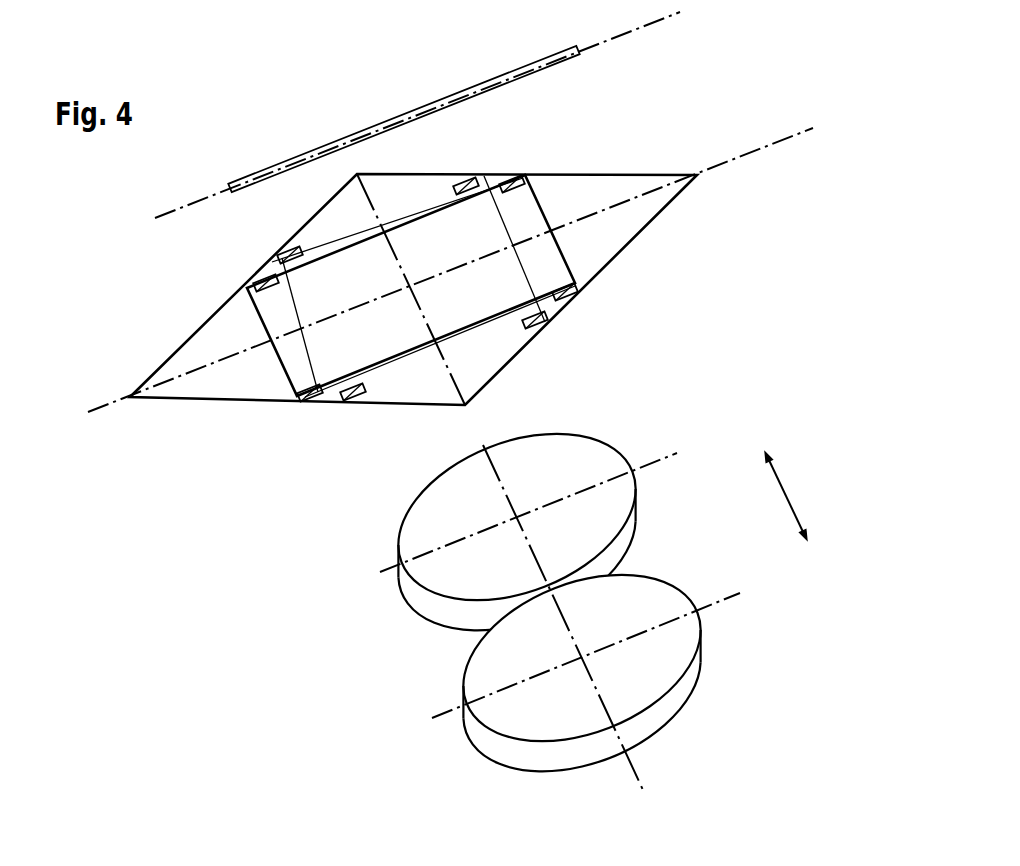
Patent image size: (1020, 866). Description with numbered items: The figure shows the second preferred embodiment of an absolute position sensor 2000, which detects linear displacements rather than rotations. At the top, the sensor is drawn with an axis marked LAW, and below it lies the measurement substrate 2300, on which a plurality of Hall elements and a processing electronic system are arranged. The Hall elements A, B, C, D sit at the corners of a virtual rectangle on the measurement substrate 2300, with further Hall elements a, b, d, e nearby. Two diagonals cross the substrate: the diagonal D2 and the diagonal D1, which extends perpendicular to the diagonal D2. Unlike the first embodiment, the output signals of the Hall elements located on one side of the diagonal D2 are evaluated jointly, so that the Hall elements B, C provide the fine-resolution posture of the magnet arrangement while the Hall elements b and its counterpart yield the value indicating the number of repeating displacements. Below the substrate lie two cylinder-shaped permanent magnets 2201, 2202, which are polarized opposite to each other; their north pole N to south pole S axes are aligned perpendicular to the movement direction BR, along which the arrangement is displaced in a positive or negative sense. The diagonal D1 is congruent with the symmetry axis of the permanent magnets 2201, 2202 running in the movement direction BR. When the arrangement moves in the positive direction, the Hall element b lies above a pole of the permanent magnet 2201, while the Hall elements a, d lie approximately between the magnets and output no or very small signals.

The absolute position sensor 2000 is at (567, 43).
The laser working axis LAW is at (617, 37).
The measurement substrate 2300 is at (633, 259).
The diagonal D1 is at (452, 373).
The diagonal D2 is at (737, 157).
The Hall element A is at (530, 188).
The Hall element B is at (573, 277).
The Hall element C is at (295, 388).
The Hall element D is at (258, 297).
The Hall element a is at (457, 187).
The Hall element b is at (542, 329).
The Hall element d is at (298, 246).
The pad e is at (364, 387).
The permanent magnet 2202 is at (632, 510).
The permanent magnet 2201 is at (700, 655).
The north pole N is at (560, 590).
The south pole S is at (559, 589).
The movement direction BR is at (791, 492).